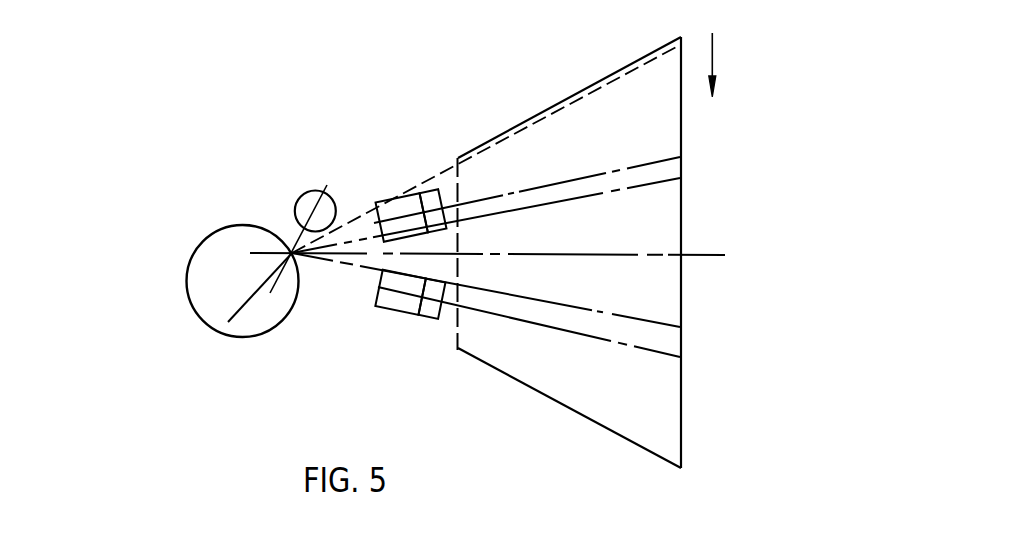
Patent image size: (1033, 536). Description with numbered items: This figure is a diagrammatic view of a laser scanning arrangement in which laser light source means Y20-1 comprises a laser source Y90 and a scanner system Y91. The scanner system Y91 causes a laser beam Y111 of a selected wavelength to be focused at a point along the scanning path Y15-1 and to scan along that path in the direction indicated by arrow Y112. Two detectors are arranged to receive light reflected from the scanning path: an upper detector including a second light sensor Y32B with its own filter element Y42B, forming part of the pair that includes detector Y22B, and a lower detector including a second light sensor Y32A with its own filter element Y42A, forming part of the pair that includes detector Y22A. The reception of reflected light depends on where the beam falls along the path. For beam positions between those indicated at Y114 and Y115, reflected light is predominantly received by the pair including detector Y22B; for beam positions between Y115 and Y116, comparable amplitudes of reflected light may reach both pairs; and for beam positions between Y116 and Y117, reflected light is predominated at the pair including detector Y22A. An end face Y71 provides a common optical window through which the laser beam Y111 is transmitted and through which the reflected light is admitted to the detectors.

The laser light source means Y20-1 is at (178, 188).
The laser source Y90 is at (302, 191).
The scanner system Y91 is at (212, 330).
The detector pair member Y22A is at (370, 339).
The detector pair member Y22B is at (401, 158).
The second light sensor Y32A is at (380, 285).
The second light sensor Y32B is at (392, 205).
The filter element Y42A is at (430, 313).
The filter element Y42B is at (428, 197).
The end face Y71 is at (458, 182).
The laser beam Y111 is at (575, 93).
The arrow Y112 is at (713, 48).
The beam position Y114 is at (643, 57).
The beam position Y115 is at (507, 212).
The beam position Y116 is at (513, 293).
The beam position Y117 is at (550, 401).
The scanning path Y15-1 is at (680, 408).